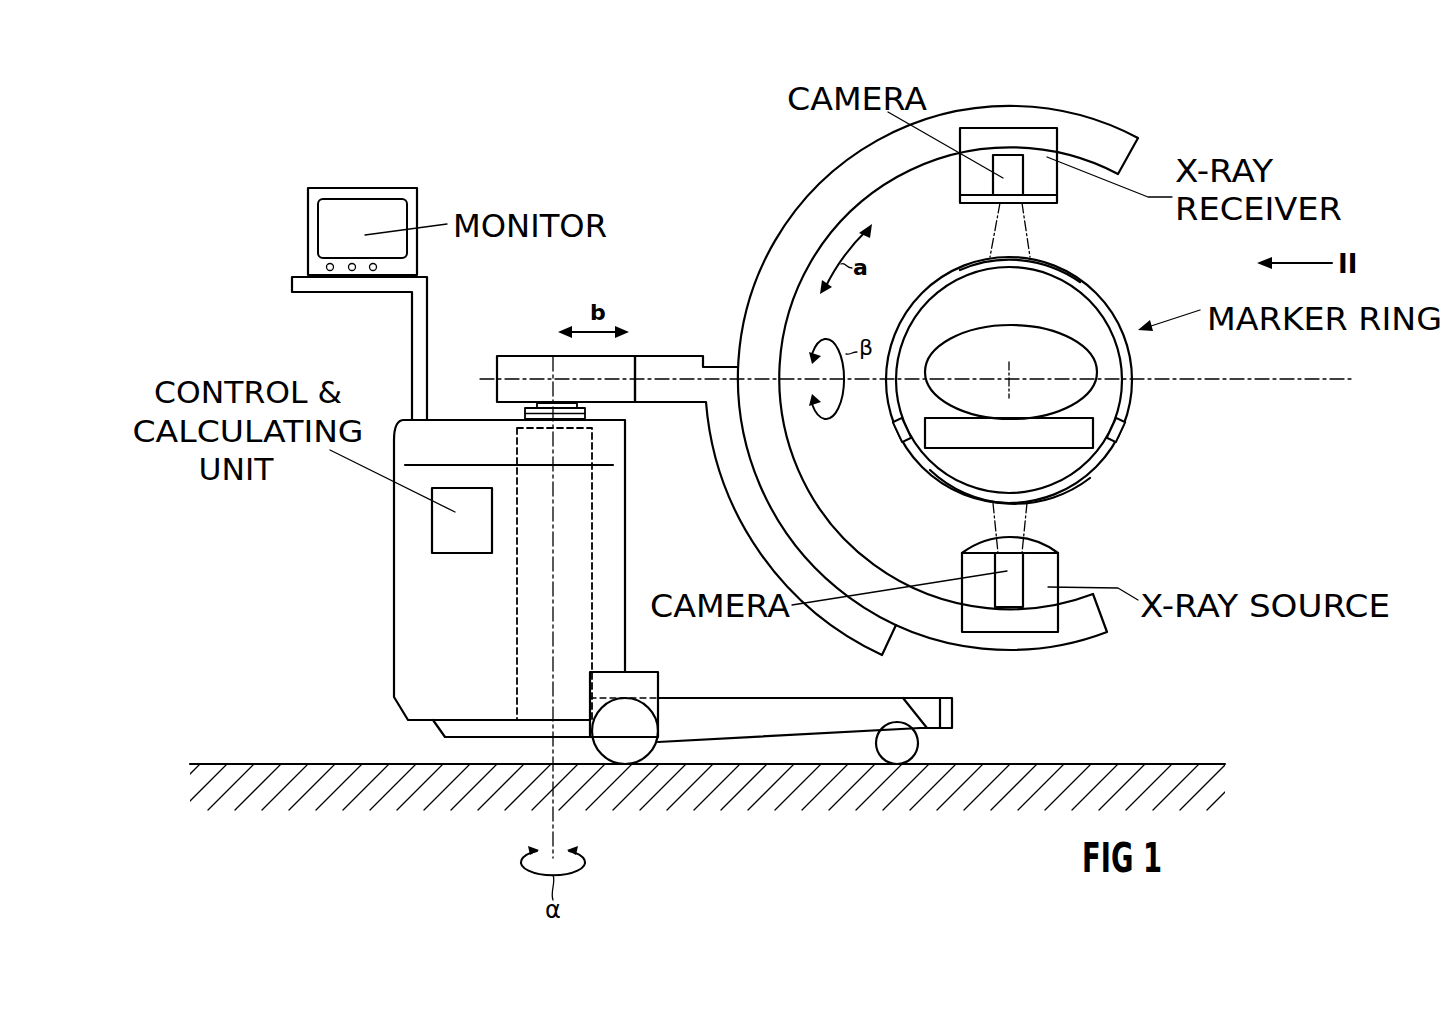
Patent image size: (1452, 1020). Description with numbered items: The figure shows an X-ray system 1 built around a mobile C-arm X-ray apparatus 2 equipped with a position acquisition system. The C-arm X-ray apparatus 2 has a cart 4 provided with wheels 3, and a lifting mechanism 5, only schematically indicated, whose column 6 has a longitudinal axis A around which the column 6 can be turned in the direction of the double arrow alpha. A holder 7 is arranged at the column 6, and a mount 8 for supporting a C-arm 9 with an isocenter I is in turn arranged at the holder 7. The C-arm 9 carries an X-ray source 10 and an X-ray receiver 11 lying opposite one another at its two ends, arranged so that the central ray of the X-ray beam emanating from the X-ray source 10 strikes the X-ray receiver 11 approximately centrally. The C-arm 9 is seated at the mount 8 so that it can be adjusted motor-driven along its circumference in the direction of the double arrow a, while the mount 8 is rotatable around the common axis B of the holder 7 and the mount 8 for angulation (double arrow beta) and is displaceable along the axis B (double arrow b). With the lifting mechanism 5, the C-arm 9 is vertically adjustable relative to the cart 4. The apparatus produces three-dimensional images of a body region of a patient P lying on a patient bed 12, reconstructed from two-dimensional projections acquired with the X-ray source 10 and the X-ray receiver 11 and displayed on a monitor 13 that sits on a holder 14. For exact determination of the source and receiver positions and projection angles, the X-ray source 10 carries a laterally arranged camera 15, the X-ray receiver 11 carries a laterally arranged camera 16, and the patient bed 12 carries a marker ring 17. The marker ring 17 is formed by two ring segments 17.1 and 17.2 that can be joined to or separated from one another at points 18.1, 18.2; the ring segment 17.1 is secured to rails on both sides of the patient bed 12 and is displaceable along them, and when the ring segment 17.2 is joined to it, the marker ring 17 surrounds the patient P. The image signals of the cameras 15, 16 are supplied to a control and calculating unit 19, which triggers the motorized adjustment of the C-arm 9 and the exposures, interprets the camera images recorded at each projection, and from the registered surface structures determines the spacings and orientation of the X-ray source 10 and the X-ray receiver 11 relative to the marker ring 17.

The X-ray system 1 is at (607, 169).
The C-arm X-ray apparatus 2 is at (393, 665).
The wheels 3 is at (623, 727).
The cart 4 is at (427, 597).
The lifting mechanism 5 is at (532, 672).
The column 6 is at (592, 410).
The holder 7 is at (515, 370).
The mount 8 is at (657, 357).
The C-arm 9 is at (830, 193).
The X-ray source 10 is at (1040, 570).
The X-ray receiver 11 is at (1047, 180).
The patient bed 12 is at (1040, 437).
The monitor 13 is at (308, 222).
The holder 14 is at (317, 293).
The camera 15 is at (1005, 590).
The camera 16 is at (1009, 155).
The marker ring 17 is at (1133, 350).
The ring segment 17.1 is at (1097, 460).
The ring segment 17.2 is at (1090, 293).
The joining point 18.1 is at (1125, 428).
The joining point 18.2 is at (892, 432).
The control and calculating unit 19 is at (448, 522).
The patient P is at (1003, 325).
The isocenter I is at (1012, 380).
The longitudinal axis A is at (553, 822).
The common axis B is at (1270, 378).